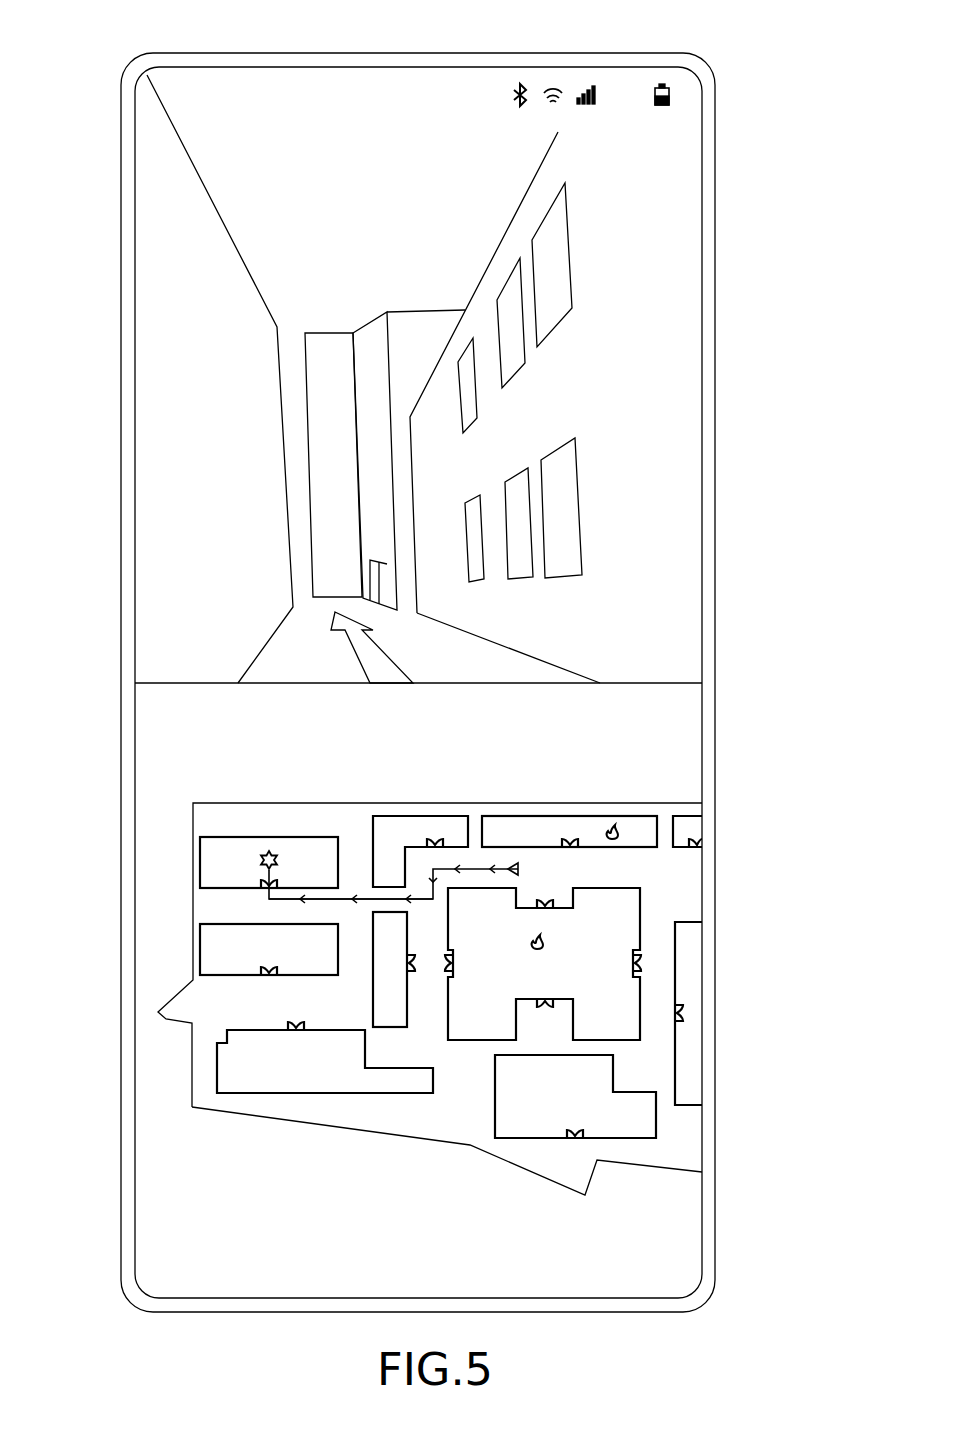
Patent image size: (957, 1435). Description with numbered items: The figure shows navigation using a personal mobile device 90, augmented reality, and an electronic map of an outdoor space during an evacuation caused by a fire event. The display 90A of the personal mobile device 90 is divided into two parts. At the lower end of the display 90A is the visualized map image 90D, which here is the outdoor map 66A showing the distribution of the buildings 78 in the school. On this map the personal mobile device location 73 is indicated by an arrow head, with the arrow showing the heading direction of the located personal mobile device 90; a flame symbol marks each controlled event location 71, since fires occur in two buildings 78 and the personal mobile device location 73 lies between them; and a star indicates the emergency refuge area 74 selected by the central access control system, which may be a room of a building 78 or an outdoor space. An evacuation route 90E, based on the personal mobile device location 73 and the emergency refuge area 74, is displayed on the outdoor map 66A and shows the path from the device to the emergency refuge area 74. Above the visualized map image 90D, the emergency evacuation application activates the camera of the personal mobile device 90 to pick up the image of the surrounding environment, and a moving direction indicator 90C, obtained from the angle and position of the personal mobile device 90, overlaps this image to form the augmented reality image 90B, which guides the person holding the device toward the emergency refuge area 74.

The personal mobile device 90 is at (716, 381).
The display 90A is at (818, 513).
The augmented reality image 90B is at (613, 510).
The moving direction indicator 90C is at (357, 657).
The visualized map image 90D is at (657, 772).
The evacuation route 90E is at (313, 899).
The outdoor map 66A is at (257, 800).
The controlled event location 71 is at (614, 832).
The personal mobile device location 73 is at (518, 869).
The emergency refuge area 74 is at (262, 858).
The building 78 is at (483, 277).